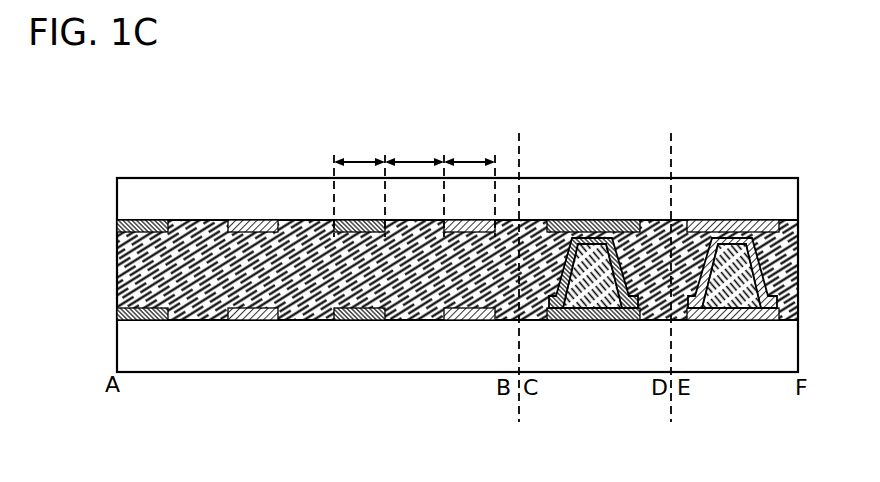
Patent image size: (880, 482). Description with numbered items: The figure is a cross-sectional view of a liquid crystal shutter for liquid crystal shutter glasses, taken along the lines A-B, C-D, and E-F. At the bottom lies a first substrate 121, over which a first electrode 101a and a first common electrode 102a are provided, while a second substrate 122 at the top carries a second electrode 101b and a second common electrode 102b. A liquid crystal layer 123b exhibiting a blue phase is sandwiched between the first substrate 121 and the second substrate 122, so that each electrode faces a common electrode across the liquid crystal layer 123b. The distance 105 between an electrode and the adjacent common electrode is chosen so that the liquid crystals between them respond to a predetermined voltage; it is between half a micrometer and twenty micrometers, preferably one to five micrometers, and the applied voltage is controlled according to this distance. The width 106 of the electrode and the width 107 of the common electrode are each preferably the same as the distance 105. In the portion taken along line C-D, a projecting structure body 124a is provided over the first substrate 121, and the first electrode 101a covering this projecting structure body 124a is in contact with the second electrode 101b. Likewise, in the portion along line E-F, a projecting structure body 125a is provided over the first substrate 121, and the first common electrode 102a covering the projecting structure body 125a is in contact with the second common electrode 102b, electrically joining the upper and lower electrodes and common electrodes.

The first electrode 101a is at (133, 322).
The second electrode 101b is at (135, 218).
The first common electrode 102a is at (245, 322).
The second common electrode 102b is at (252, 218).
The distance between the electrode and the common electrode 105 is at (418, 160).
The width of the electrode 106 is at (363, 160).
The width of the common electrode 107 is at (463, 160).
The first substrate 121 is at (312, 342).
The second substrate 122 is at (183, 197).
The liquid crystal layer 123b is at (198, 282).
The projecting structure body 124a is at (598, 320).
The projecting structure body 125a is at (753, 322).